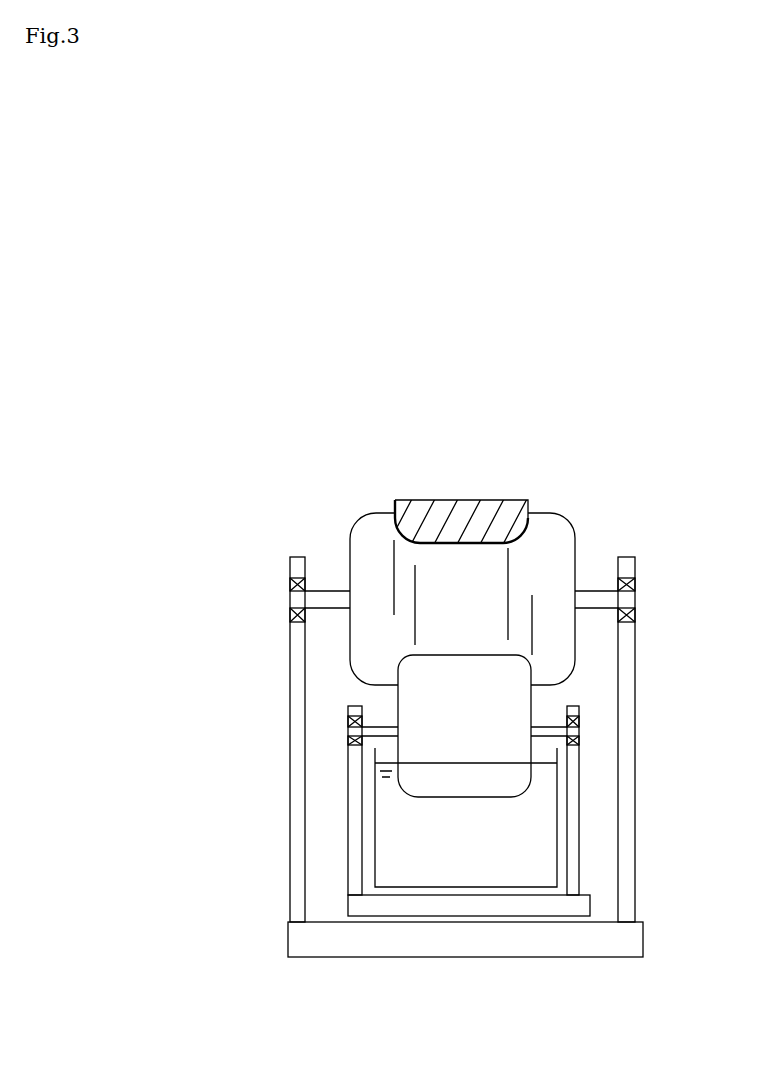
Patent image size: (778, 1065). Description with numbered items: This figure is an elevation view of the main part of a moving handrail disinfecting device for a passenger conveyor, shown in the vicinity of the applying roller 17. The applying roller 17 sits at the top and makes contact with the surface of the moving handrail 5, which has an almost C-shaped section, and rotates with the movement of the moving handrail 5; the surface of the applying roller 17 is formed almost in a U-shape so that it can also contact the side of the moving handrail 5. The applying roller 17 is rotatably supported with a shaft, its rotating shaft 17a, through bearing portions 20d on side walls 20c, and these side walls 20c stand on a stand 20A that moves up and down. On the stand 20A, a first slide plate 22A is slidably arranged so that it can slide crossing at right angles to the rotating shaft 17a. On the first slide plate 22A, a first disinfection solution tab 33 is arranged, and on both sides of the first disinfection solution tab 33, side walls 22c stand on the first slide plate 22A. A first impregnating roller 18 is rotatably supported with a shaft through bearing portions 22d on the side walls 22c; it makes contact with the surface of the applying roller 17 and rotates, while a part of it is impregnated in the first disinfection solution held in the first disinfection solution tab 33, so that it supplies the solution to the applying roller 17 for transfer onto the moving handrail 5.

The moving handrail 5 is at (500, 498).
The applying roller 17 is at (565, 548).
The rotating shaft 17a is at (590, 590).
The first impregnating roller 18 is at (527, 707).
The stand 20A is at (525, 940).
The side walls 20c is at (290, 730).
The bearing portions 20d is at (290, 618).
The first slide plate 22A is at (410, 907).
The side walls 22c is at (345, 810).
The bearing portions 22d is at (342, 738).
The first disinfection solution tab 33 is at (375, 850).